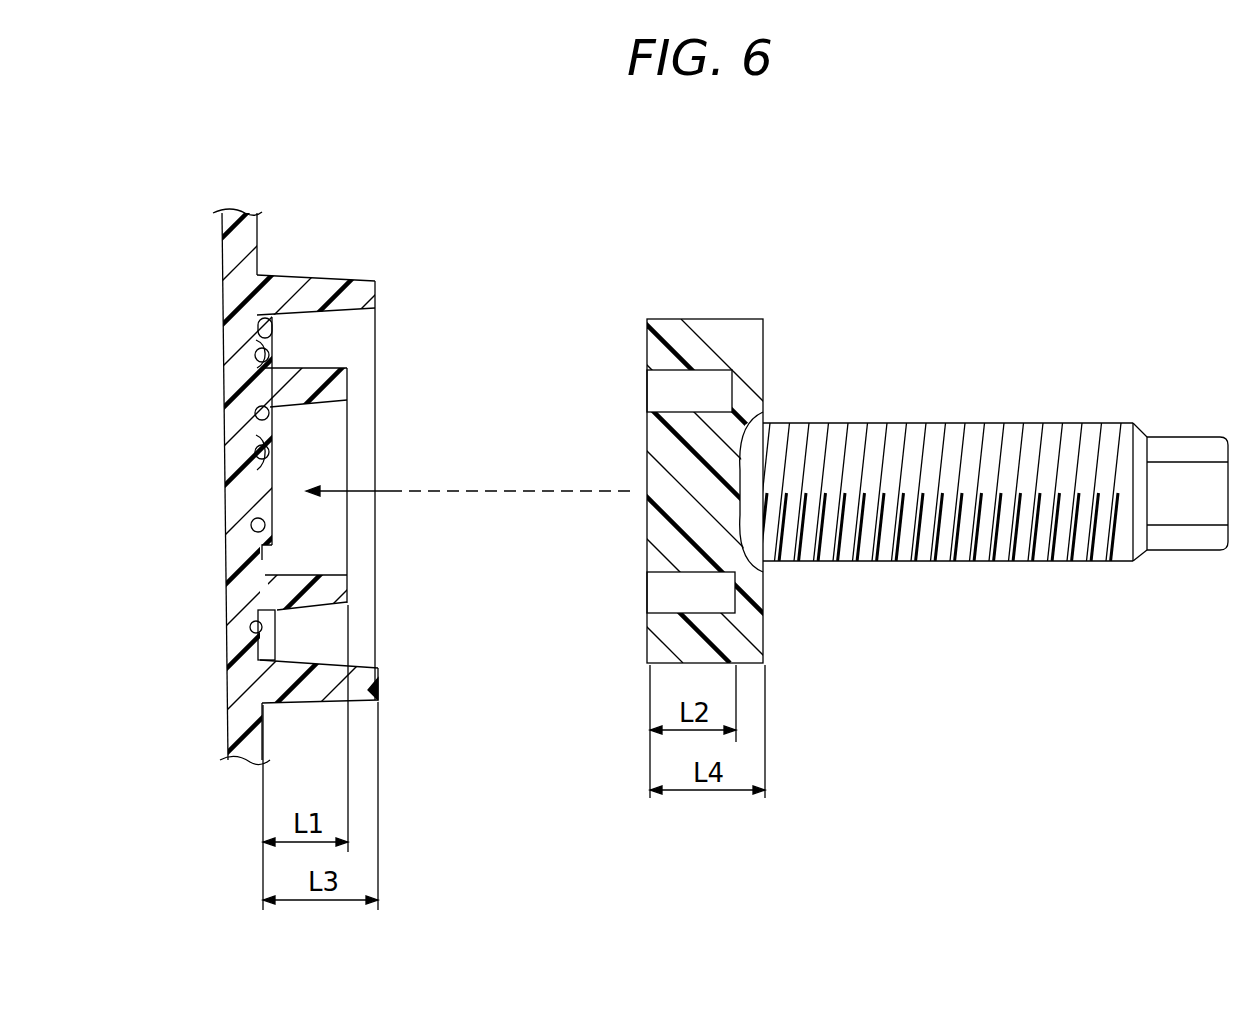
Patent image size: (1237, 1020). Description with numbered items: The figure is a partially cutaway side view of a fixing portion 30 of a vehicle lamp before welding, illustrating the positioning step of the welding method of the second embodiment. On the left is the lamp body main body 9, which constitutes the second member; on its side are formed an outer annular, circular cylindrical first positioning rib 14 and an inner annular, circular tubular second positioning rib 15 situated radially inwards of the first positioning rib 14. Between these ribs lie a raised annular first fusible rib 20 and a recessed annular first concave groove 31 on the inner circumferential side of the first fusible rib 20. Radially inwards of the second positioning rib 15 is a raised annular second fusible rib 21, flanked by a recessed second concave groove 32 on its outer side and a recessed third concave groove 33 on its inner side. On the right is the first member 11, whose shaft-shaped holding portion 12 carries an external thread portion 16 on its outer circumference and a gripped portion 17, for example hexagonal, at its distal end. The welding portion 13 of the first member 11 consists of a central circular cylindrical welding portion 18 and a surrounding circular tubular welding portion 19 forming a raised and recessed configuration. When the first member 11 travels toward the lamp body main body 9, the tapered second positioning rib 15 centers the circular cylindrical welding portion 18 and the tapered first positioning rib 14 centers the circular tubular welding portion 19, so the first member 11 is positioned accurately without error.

The lamp body main body 9 is at (268, 232).
The first positioning rib 14 is at (330, 278).
The second positioning rib 15 is at (316, 366).
The first fusible rib 20 is at (257, 327).
The second fusible rib 21 is at (270, 420).
The first concave groove 31 is at (262, 382).
The second concave groove 32 is at (256, 407).
The third concave groove 33 is at (256, 473).
The fixing portion 30 is at (650, 190).
The welding portion 13 is at (742, 318).
The circular tubular welding portion 19 is at (655, 353).
The circular cylindrical welding portion 18 is at (655, 450).
The first member 11 is at (978, 418).
The external thread portion 16 is at (1055, 422).
The holding portion 12 is at (959, 562).
The gripped portion 17 is at (1188, 540).